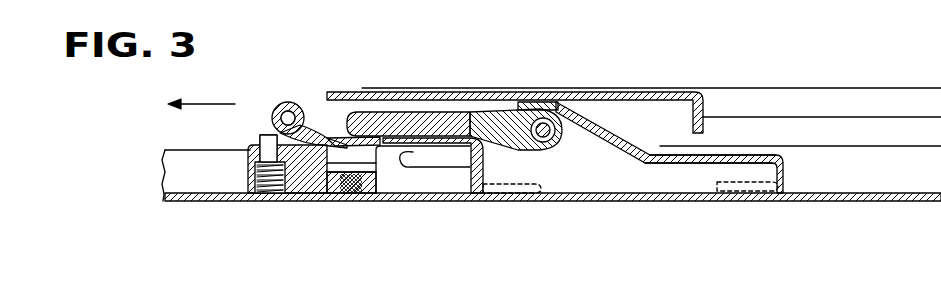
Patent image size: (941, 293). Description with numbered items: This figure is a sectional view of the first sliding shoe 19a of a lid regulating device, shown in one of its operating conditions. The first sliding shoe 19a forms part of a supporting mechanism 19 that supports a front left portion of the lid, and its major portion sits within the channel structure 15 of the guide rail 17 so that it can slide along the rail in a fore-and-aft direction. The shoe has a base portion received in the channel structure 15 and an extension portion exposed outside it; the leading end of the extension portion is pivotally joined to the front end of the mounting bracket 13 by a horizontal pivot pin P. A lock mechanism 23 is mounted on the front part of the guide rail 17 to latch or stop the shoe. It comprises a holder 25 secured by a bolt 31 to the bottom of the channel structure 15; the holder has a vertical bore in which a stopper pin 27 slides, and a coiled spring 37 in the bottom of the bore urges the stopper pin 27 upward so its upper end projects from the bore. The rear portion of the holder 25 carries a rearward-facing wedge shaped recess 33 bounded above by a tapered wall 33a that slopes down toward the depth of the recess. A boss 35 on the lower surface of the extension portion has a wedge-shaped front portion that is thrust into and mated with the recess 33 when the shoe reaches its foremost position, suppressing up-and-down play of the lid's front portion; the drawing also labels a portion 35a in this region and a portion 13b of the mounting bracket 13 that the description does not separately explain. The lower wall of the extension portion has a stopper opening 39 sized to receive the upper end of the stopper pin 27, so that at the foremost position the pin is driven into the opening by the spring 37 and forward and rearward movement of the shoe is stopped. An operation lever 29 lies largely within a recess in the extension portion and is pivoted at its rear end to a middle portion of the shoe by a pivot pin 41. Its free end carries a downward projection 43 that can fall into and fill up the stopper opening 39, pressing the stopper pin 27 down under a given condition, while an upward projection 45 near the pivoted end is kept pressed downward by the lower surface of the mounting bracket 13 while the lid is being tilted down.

The pivot pin P is at (283, 110).
The mounting bracket 13 is at (843, 117).
The top wall of housing 13b is at (618, 110).
The channel structure 15 is at (581, 199).
The guide rail 17 is at (841, 187).
The supporting mechanism 19 is at (323, 135).
The first sliding shoe 19a is at (689, 182).
The lock mechanism 23 is at (232, 193).
The holder 25 is at (298, 194).
The stopper pin 27 is at (262, 150).
The operation lever 29 is at (523, 134).
The bolt 31 is at (362, 193).
The wedge shaped recess 33 is at (329, 193).
The tapered wall 33a is at (382, 178).
The boss 35 is at (453, 160).
The leg of latch body 35a is at (413, 155).
The coiled spring 37 is at (262, 193).
The stopper opening 39 is at (368, 138).
The pivot pin 41 is at (556, 135).
The downward projection 43 is at (367, 140).
The upward projection 45 is at (500, 92).